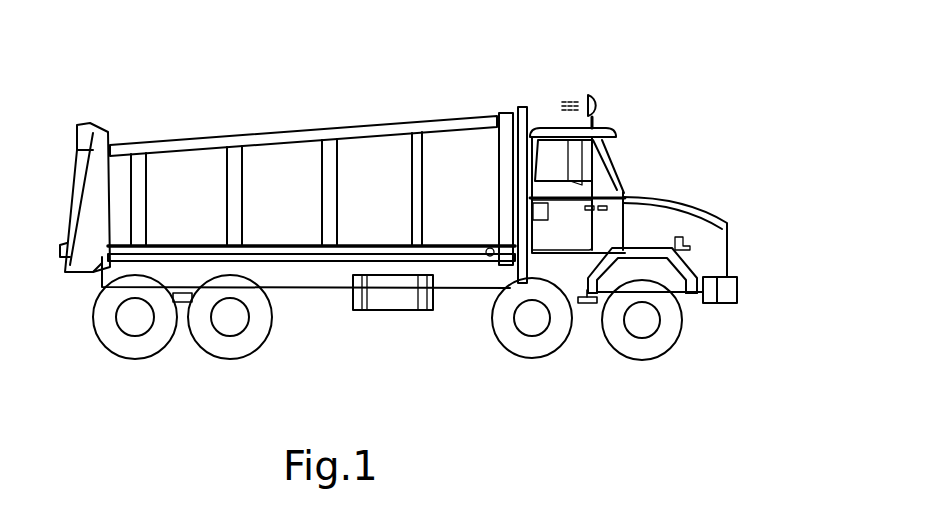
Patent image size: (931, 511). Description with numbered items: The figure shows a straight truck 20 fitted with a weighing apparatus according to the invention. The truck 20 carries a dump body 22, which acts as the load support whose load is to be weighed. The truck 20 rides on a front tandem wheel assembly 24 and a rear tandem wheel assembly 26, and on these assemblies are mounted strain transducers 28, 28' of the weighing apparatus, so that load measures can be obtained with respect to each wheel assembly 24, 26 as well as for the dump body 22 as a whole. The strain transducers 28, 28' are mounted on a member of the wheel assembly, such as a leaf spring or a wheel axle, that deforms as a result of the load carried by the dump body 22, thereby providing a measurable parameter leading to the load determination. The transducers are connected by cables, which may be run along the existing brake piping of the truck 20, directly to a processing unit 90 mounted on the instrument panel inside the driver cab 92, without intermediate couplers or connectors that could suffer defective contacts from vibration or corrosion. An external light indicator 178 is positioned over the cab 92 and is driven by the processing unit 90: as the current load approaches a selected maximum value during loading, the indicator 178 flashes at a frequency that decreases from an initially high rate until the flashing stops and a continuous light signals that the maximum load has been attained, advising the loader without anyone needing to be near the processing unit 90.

The straight truck 20 is at (715, 240).
The dump body 22 is at (177, 157).
The front tandem wheel assembly 24 is at (603, 362).
The rear tandem wheel assembly 26 is at (178, 340).
The strain transducer 28 is at (556, 373).
The strain transducer 28' is at (223, 360).
The processing unit 90 is at (623, 197).
The driver cab 92 is at (555, 128).
The external light indicator 178 is at (600, 90).